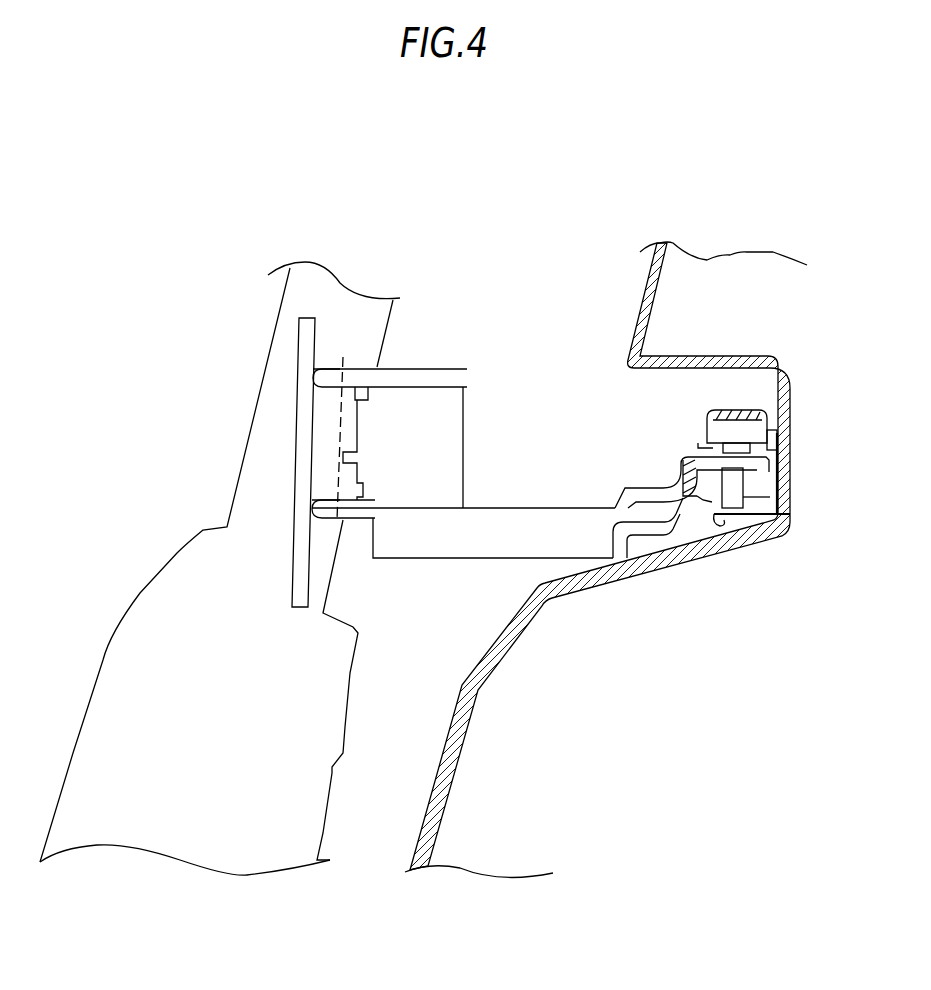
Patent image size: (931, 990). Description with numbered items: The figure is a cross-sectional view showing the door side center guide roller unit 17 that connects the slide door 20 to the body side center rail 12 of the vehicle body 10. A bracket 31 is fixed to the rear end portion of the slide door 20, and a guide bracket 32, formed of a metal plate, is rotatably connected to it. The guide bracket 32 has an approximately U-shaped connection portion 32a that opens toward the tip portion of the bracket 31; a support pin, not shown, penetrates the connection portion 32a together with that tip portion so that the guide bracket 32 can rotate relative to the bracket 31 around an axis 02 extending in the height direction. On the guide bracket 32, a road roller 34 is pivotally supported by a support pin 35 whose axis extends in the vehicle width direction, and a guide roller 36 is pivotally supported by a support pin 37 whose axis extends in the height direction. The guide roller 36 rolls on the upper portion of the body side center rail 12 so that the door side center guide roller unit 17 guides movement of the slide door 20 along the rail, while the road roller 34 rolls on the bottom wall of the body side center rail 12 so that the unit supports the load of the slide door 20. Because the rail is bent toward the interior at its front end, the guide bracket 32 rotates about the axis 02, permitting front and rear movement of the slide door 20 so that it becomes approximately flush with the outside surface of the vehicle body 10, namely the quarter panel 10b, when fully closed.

The vehicle body 10 is at (606, 559).
The quarter panel 10b is at (647, 288).
The body side center rail 12 is at (707, 413).
The door side center guide roller unit 17 is at (724, 541).
The slide door 20 is at (137, 598).
The bracket 31 is at (299, 338).
The guide bracket 32 is at (527, 518).
The connection portion 32a is at (442, 370).
The road roller 34 is at (781, 509).
The support pin 35 is at (710, 490).
The guide roller 36 is at (752, 432).
The support pin 37 is at (755, 463).
The axis 02 is at (322, 412).